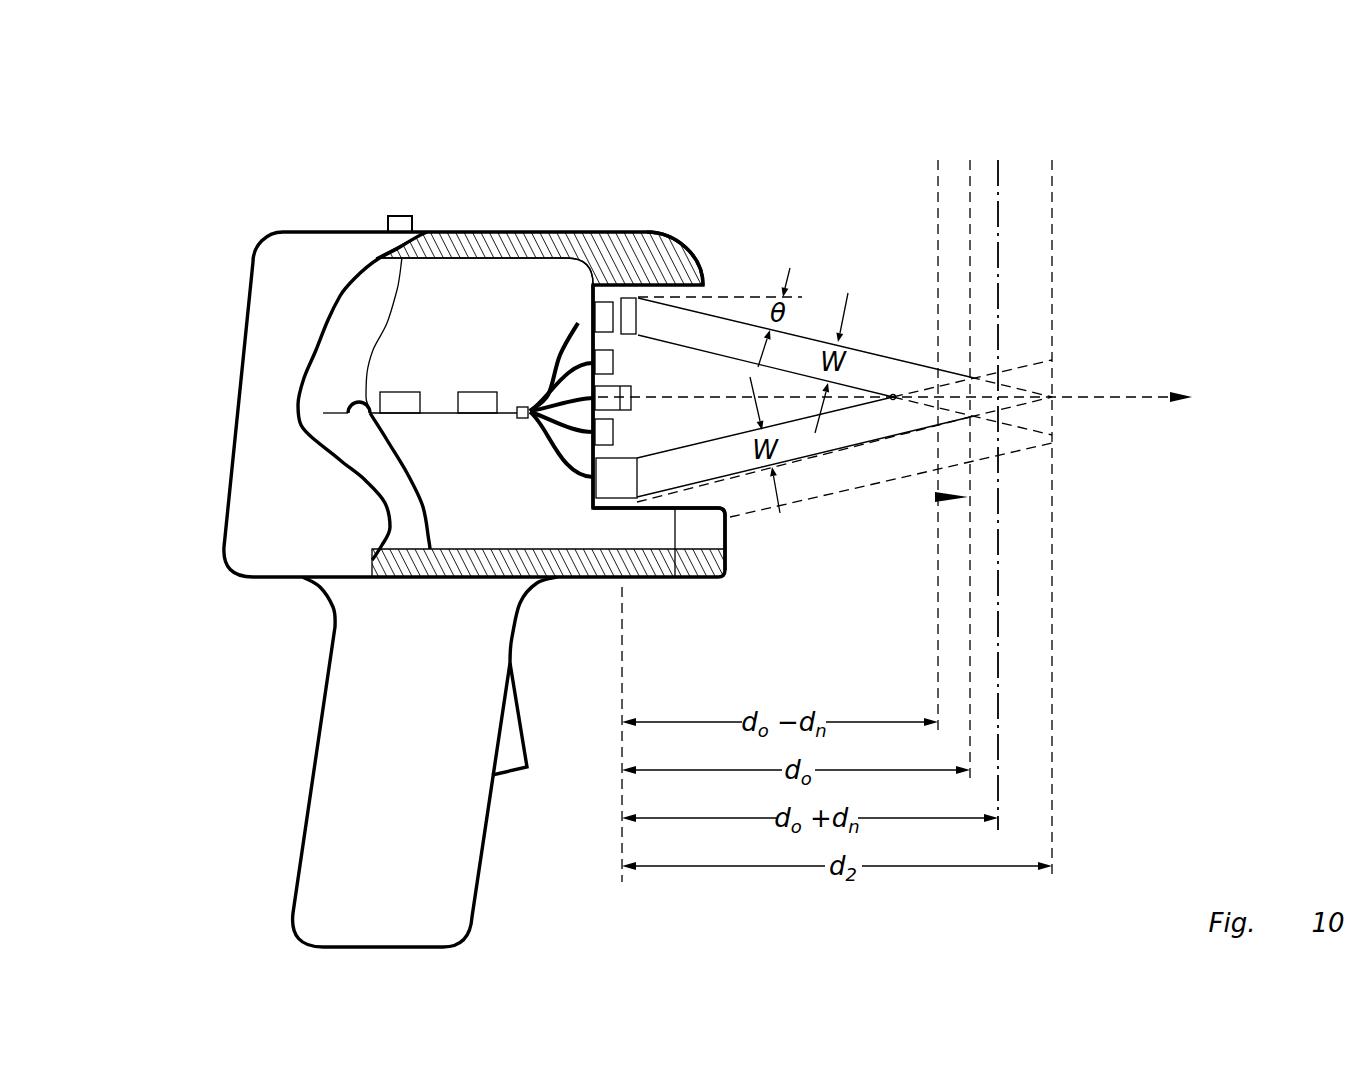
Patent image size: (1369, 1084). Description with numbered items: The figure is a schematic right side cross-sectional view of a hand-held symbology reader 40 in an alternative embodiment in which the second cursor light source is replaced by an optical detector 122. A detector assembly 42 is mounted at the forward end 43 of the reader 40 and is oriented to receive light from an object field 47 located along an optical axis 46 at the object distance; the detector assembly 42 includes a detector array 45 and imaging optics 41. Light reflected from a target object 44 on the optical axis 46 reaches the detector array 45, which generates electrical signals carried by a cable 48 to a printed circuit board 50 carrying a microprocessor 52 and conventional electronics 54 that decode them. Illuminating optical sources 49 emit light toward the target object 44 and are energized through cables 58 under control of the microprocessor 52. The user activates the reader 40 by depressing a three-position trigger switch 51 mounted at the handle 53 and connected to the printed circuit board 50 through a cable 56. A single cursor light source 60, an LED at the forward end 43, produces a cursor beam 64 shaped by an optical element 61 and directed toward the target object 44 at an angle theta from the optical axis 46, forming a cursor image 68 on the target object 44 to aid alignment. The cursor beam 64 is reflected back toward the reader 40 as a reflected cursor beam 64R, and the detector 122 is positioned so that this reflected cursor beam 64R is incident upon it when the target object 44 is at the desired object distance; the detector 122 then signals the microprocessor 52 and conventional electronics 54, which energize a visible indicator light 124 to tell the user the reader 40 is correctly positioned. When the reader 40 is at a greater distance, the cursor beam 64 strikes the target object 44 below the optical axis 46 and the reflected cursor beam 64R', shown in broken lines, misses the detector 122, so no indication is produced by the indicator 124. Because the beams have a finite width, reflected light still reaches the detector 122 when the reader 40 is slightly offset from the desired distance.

The hand-held symbology reader 40 is at (650, 577).
The imaging optics 41 is at (517, 417).
The detector assembly 42 is at (640, 482).
The forward end 43 is at (690, 245).
The target object 44 is at (966, 200).
The detector array 45 is at (632, 383).
The optical axis 46 is at (1128, 388).
The object field 47 is at (935, 497).
The cable 48 is at (548, 405).
The illuminating optical sources 49 is at (640, 335).
The printed circuit board 50 is at (510, 413).
The three-position trigger switch 51 is at (518, 713).
The microprocessor 52 is at (477, 392).
The handle 53 is at (337, 772).
The conventional electronics 54 is at (397, 392).
The cable 56 is at (365, 474).
The cables 58 is at (590, 385).
The cursor light source 60 is at (622, 298).
The optical element 61 is at (660, 235).
The cursor beam 64 is at (815, 338).
The reflected cursor beam 64R is at (803, 505).
The reflected cursor beam 64R' is at (891, 541).
The cursor image 68 is at (960, 389).
The optical detector 122 is at (675, 577).
The visible indicator light 124 is at (400, 216).